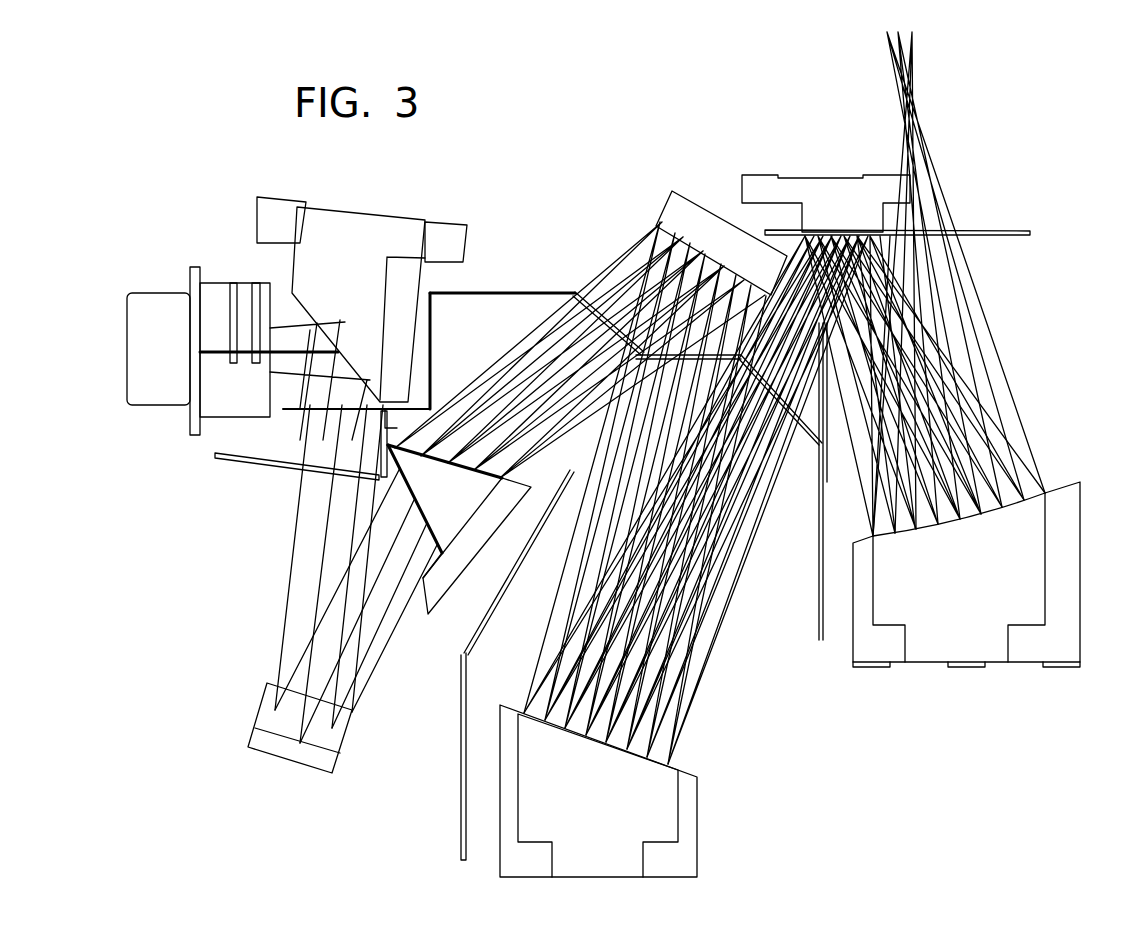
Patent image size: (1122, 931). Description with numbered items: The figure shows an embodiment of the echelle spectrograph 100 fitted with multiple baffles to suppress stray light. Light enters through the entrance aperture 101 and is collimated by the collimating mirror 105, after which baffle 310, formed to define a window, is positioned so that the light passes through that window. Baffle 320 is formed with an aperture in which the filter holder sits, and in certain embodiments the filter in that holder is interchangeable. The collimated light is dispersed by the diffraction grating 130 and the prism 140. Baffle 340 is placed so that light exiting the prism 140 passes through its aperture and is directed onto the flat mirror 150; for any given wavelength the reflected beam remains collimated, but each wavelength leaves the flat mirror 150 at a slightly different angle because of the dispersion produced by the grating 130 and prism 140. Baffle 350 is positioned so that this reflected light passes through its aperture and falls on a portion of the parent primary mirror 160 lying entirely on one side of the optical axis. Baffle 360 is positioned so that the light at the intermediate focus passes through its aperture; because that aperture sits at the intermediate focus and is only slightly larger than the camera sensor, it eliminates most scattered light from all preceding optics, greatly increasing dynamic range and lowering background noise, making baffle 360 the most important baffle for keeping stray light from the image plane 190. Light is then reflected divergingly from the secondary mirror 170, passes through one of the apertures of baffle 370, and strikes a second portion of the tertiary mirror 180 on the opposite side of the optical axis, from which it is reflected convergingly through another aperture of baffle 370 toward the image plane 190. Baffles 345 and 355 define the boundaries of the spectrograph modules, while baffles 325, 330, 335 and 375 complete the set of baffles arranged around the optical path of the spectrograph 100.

The echelle spectrograph 100 is at (702, 833).
The entrance aperture 101 is at (172, 268).
The collimating mirror 105 is at (328, 279).
The diffraction grating 130 is at (246, 719).
The prism 140 is at (425, 506).
The flat mirror 150 is at (707, 248).
The primary mirror 160 is at (573, 816).
The secondary mirror 170 is at (812, 174).
The tertiary mirror 180 is at (941, 598).
The image plane 190 is at (923, 36).
The baffle 310 is at (288, 463).
The baffle 320 is at (218, 462).
The baffle 325 is at (395, 427).
The baffle 330 is at (433, 327).
The baffle 335 is at (506, 290).
The baffle 340 is at (600, 312).
The baffle 345 is at (487, 633).
The baffle 350 is at (643, 353).
The baffle 355 is at (461, 745).
The baffle 360 is at (801, 444).
The baffle 370 is at (1004, 232).
The baffle 375 is at (819, 598).